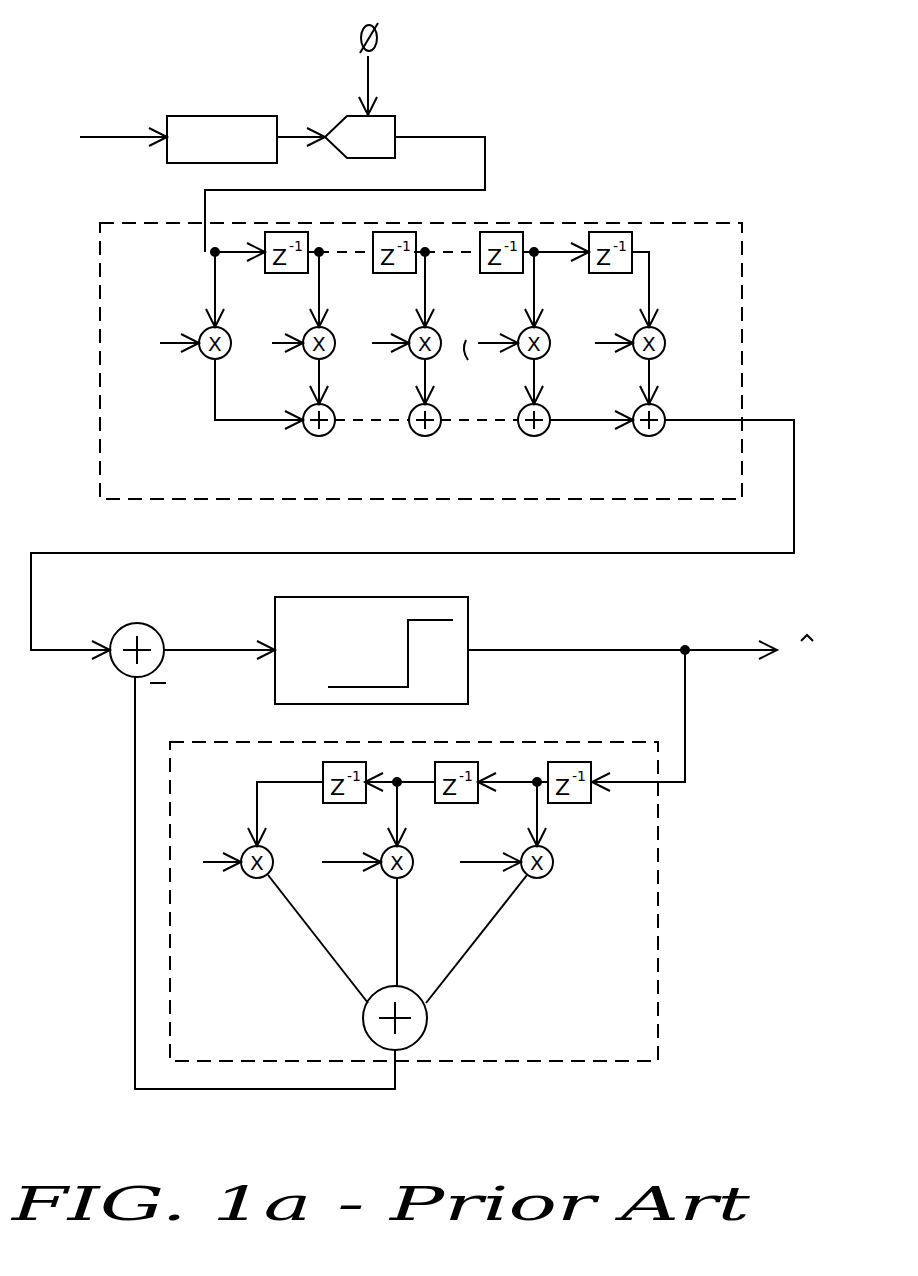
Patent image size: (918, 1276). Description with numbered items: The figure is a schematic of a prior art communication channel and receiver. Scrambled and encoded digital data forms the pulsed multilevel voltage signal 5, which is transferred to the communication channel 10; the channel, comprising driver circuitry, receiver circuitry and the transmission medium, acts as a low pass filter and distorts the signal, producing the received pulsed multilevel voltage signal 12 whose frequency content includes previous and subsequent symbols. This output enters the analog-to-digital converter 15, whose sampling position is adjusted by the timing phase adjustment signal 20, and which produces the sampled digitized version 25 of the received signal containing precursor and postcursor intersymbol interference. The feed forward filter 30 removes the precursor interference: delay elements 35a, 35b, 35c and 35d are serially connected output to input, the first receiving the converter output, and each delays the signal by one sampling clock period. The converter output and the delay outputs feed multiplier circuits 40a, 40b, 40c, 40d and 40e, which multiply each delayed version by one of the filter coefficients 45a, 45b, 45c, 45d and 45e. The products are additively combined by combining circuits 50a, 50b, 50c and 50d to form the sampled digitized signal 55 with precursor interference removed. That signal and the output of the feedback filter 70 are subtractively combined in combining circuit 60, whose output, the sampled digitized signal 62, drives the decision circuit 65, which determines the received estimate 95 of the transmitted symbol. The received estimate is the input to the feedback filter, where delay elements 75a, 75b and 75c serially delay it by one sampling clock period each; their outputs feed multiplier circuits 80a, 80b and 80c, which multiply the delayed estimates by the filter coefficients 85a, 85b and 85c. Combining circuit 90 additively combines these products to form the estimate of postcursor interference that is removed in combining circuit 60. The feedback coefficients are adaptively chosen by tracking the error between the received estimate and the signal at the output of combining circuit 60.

The pulsed multilevel voltage signal 5 is at (46, 126).
The communication channel 10 is at (203, 116).
The received pulsed multilevel voltage signal 12 is at (285, 101).
The analog-to-digital converter 15 is at (357, 115).
The timing phase adjustment signal 20 is at (393, 24).
The sampled digitized version of the received signal 25 is at (438, 101).
The feed forward filter 30 is at (100, 329).
The delay element 35a is at (308, 246).
The delay element 35b is at (414, 246).
The delay element 35c is at (523, 246).
The delay element 35d is at (633, 246).
The multiplier circuit 40a is at (229, 336).
The multiplier circuit 40b is at (333, 336).
The multiplier circuit 40c is at (439, 336).
The multiplier circuit 40d is at (548, 336).
The multiplier circuit 40e is at (663, 336).
The filter coefficient 45a is at (139, 327).
The filter coefficient 45b is at (256, 360).
The filter coefficient 45c is at (360, 365).
The filter coefficient 45d is at (463, 364).
The filter coefficient 45e is at (573, 362).
The combining circuit 50a is at (310, 437).
The combining circuit 50b is at (418, 437).
The combining circuit 50c is at (526, 437).
The combining circuit 50d is at (641, 437).
The sampled digitized signal 55 is at (68, 553).
The combining circuit 60 is at (125, 627).
The sampled digitized signal 62 is at (201, 616).
The decision circuit 65 is at (470, 622).
The feedback filter 70 is at (226, 741).
The delay element 75a is at (592, 761).
The delay element 75b is at (478, 761).
The delay element 75c is at (367, 761).
The multiplier circuit 80a is at (550, 851).
The multiplier circuit 80b is at (410, 851).
The multiplier circuit 80c is at (269, 851).
The filter coefficient 85a is at (441, 882).
The filter coefficient 85b is at (308, 884).
The filter coefficient 85c is at (195, 845).
The combining circuit 90 is at (427, 1016).
The received estimate 95 is at (815, 636).